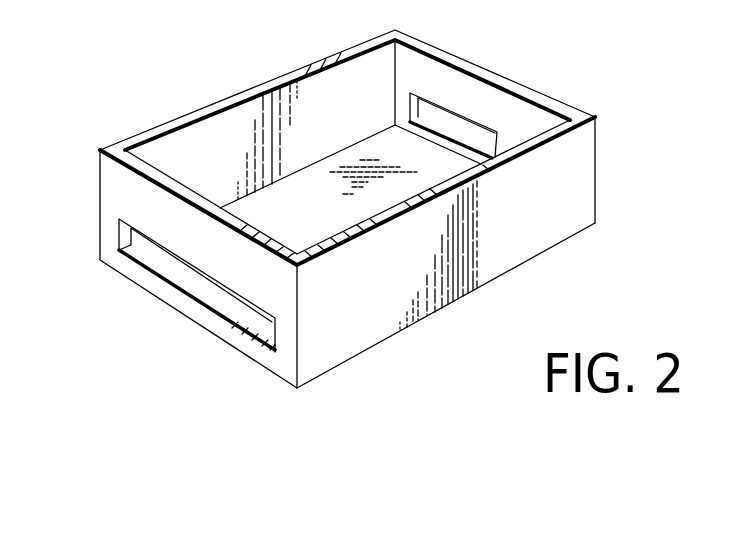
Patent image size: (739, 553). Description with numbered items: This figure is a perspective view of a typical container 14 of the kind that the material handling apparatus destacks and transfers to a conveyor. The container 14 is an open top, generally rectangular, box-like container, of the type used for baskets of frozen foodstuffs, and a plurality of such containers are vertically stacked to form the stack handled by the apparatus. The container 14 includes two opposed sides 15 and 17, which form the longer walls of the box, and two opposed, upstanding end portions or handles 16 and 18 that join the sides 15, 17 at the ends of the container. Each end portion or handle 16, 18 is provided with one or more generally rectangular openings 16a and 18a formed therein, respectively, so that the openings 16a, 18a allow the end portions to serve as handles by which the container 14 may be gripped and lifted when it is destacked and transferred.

The container 14 is at (333, 206).
The side 15 is at (237, 92).
The end portion or handle 16 is at (170, 269).
The rectangular opening 16a is at (183, 263).
The side 17 is at (372, 232).
The end portion or handle 18 is at (552, 98).
The rectangular opening 18a is at (457, 121).